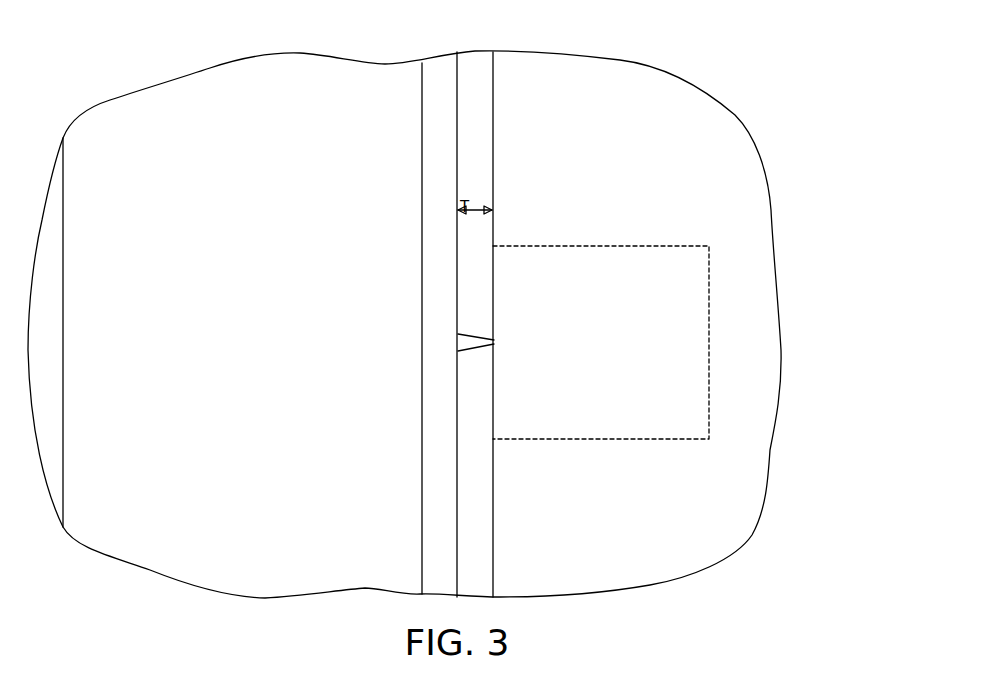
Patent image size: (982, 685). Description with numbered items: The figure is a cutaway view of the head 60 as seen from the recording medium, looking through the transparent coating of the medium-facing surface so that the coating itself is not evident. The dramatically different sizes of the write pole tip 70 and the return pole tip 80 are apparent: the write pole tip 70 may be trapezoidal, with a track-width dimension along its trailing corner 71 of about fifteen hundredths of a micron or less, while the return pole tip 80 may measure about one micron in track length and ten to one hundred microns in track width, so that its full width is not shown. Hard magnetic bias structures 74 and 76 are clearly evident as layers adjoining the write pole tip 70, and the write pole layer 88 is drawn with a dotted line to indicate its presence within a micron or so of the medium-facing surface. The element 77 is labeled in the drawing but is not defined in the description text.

The stent strut cross-section 60 is at (737, 86).
The tapered region 70 is at (494, 342).
The arrow indicating direction 71 is at (440, 337).
The coating layer 74 is at (493, 157).
The coating layer 76 is at (493, 492).
The intermediate layer 77 is at (422, 442).
The strut body 80 is at (262, 351).
The region outlined in phantom 88 is at (709, 422).